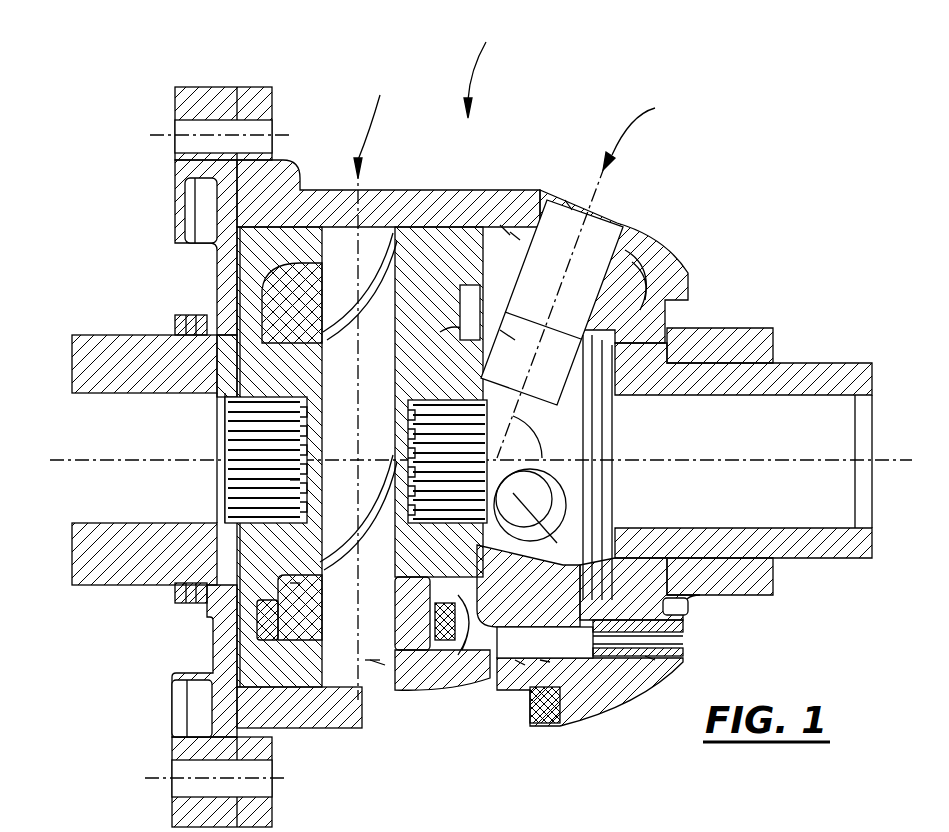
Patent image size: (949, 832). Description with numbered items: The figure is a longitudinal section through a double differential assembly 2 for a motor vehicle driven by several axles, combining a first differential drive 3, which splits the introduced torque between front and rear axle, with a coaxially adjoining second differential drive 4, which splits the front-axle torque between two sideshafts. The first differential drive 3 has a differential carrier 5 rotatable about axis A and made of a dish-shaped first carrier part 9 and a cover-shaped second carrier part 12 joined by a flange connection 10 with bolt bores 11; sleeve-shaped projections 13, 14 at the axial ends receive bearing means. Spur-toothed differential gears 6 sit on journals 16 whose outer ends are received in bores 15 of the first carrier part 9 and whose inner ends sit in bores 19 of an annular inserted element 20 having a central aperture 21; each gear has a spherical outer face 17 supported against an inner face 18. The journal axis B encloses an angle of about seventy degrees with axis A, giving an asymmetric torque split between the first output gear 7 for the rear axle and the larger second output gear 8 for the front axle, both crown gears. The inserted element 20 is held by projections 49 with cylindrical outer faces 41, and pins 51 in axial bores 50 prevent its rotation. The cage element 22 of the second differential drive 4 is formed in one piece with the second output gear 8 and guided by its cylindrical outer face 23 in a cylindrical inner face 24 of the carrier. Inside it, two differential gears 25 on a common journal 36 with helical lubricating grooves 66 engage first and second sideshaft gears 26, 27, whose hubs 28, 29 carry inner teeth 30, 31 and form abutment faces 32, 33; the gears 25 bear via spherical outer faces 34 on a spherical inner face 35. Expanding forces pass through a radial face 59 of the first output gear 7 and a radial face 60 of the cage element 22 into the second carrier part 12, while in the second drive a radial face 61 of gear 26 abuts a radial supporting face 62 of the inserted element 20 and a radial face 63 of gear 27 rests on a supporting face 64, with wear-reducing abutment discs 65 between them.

The double differential assembly 2 is at (483, 64).
The first differential drive 3 is at (638, 126).
The second differential drive 4 is at (372, 123).
The differential carrier 5 is at (537, 190).
The differential gears 6 is at (630, 290).
The first output gear 7 is at (690, 335).
The second output gear 8 is at (500, 660).
The first carrier part 9 is at (306, 190).
The flange connection 10 is at (200, 100).
The bores 11 is at (175, 122).
The second carrier part 12 is at (225, 207).
The sleeve-shaped projection 13 is at (765, 332).
The sleeve-shaped projection 14 is at (128, 345).
The bores 15 is at (565, 200).
The journal 16 is at (556, 290).
The spherical outer face 17 is at (515, 232).
The inner face 18 is at (505, 225).
The bores 19 is at (508, 330).
The inserted element 20 is at (565, 655).
The central aperture 21 is at (548, 533).
The cage element 22 is at (422, 250).
The cylindrical outer face 23 is at (270, 730).
The cylindrical inner face 24 is at (350, 655).
The differential gears 25 is at (310, 622).
The first sideshaft gear 26 is at (450, 645).
The second sideshaft gear 27 is at (180, 661).
The hub 28 is at (430, 385).
The hub 29 is at (290, 557).
The inner teeth 30 is at (420, 432).
The inner teeth 31 is at (300, 480).
The abutment face 32 is at (430, 333).
The abutment face 33 is at (293, 583).
The spherical outer face 34 is at (418, 660).
The spherical inner face 35 is at (372, 660).
The common journal 36 is at (377, 662).
The cylindrical outer faces 41 is at (630, 660).
The projections 49 is at (520, 665).
The axially extending bores 50 is at (545, 660).
The pins 51 is at (650, 658).
The radial face 59 is at (672, 615).
The radial face 60 is at (215, 690).
The radial face 61 is at (520, 378).
The radial supporting face 62 is at (466, 660).
The radial face 63 is at (190, 598).
The supporting face 64 is at (240, 330).
The abutment discs 65 is at (232, 392).
The lubricating grooves 66 is at (352, 282).